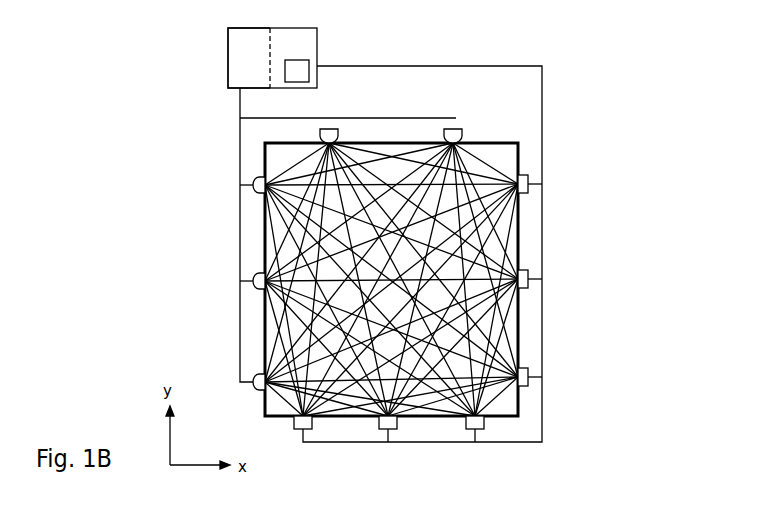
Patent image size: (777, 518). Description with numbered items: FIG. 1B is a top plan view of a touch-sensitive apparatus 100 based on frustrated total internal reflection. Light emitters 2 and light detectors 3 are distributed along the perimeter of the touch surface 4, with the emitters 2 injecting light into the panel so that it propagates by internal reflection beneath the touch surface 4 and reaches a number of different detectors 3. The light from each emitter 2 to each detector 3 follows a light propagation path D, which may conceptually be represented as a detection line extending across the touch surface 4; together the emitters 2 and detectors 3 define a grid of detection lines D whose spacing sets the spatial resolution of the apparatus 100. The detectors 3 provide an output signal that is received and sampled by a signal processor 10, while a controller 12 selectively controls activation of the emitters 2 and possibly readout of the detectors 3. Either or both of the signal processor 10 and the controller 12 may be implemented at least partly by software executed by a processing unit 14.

The touch-sensitive apparatus 100 is at (596, 70).
The signal processor 10 is at (290, 34).
The controller 12 is at (228, 44).
The processing unit 14 is at (301, 61).
The light emitters 2 is at (331, 128).
The light detectors 3 is at (530, 376).
The touch surface 4 is at (289, 169).
The light propagation paths D is at (475, 160).